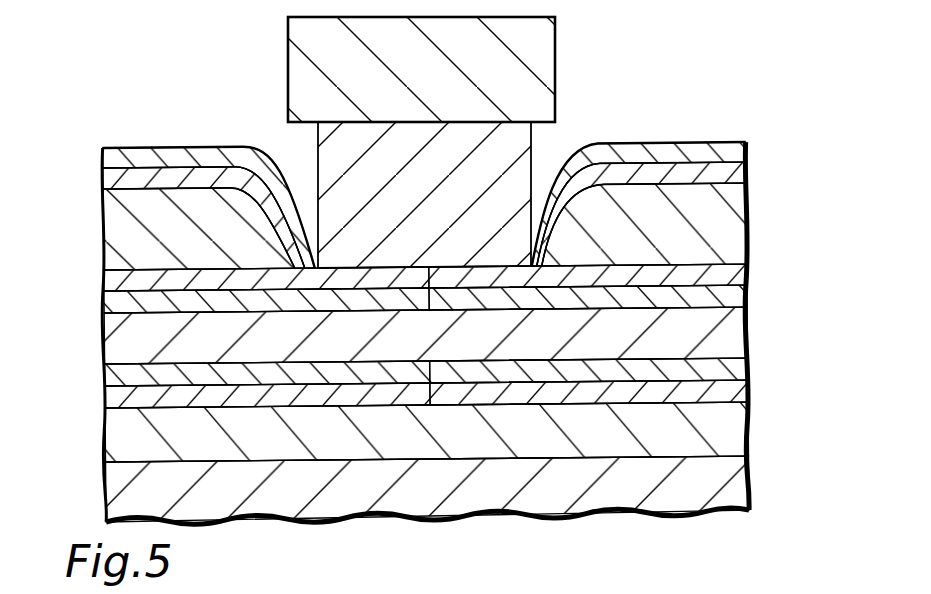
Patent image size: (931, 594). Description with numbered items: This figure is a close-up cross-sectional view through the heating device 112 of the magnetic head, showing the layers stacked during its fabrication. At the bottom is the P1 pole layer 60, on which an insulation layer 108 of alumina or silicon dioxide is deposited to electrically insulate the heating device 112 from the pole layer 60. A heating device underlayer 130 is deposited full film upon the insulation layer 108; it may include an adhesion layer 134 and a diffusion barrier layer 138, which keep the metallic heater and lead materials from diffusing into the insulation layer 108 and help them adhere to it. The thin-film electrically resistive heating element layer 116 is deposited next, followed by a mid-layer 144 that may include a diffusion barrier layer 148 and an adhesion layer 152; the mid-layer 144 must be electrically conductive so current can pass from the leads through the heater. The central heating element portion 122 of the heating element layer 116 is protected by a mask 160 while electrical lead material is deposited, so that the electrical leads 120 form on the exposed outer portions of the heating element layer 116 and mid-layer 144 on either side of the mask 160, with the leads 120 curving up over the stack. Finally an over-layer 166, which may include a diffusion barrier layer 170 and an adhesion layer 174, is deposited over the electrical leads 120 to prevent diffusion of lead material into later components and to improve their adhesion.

The P1 pole layer 60 is at (120, 491).
The insulation layer 108 is at (125, 437).
The heating device underlayer 130 is at (95, 367).
The diffusion barrier layer 138 is at (730, 370).
The adhesion layer 134 is at (735, 396).
The heating element layer 116 is at (120, 340).
The mid-layer 144 is at (95, 273).
The adhesion layer 152 is at (740, 275).
The diffusion barrier layer 148 is at (735, 298).
The electrical leads 120 is at (122, 238).
The over-layer 166 is at (95, 150).
The adhesion layer 174 is at (736, 157).
The diffusion barrier layer 170 is at (740, 174).
The heating device 112 is at (245, 122).
The central heating element portion 122 is at (416, 249).
The mask 160 is at (522, 138).